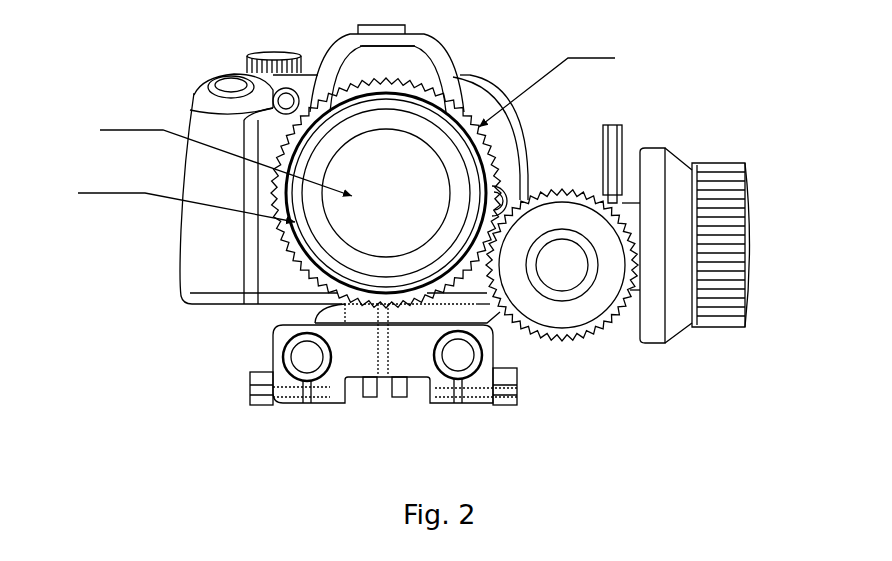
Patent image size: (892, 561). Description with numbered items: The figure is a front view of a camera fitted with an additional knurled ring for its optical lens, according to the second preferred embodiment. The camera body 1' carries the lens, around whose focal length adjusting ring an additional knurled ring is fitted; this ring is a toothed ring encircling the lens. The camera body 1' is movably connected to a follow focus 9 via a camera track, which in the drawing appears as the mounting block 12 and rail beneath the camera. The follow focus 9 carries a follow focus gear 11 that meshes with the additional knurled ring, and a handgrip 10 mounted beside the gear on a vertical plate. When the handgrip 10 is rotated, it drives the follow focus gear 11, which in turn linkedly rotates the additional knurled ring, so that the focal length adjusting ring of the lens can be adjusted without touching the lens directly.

The camera body 1' is at (299, 200).
The follow focus 9 is at (643, 127).
The handgrip 10 is at (679, 287).
The follow focus gear 11 is at (581, 354).
The mounting block 12 is at (367, 348).